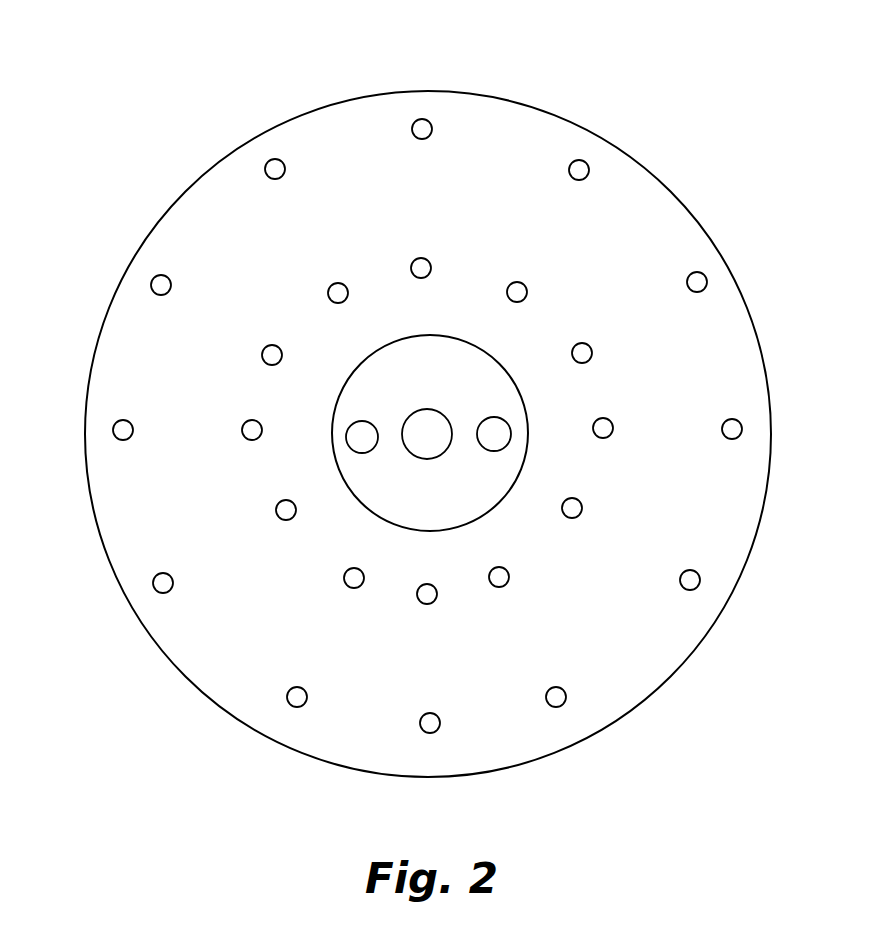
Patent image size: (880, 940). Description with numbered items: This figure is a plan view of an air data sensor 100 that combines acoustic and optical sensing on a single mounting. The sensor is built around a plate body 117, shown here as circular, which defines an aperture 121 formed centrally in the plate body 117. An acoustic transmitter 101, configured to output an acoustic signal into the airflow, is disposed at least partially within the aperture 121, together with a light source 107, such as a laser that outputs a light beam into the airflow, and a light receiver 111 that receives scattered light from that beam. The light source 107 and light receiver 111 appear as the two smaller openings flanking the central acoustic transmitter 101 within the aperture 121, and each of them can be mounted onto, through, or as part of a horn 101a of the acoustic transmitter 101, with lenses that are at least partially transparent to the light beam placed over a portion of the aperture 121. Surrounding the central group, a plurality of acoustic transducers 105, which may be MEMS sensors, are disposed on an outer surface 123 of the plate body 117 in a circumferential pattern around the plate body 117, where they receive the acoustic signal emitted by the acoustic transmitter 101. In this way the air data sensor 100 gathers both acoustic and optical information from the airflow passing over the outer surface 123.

The air data sensor 100 is at (92, 58).
The acoustic transmitter 101 is at (421, 413).
The horn 101a is at (393, 513).
The acoustic transducers 105 is at (167, 278).
The light source 107 is at (366, 445).
The light receiver 111 is at (488, 418).
The plate body 117 is at (131, 262).
The aperture 121 is at (495, 505).
The outer surface 123 is at (268, 630).